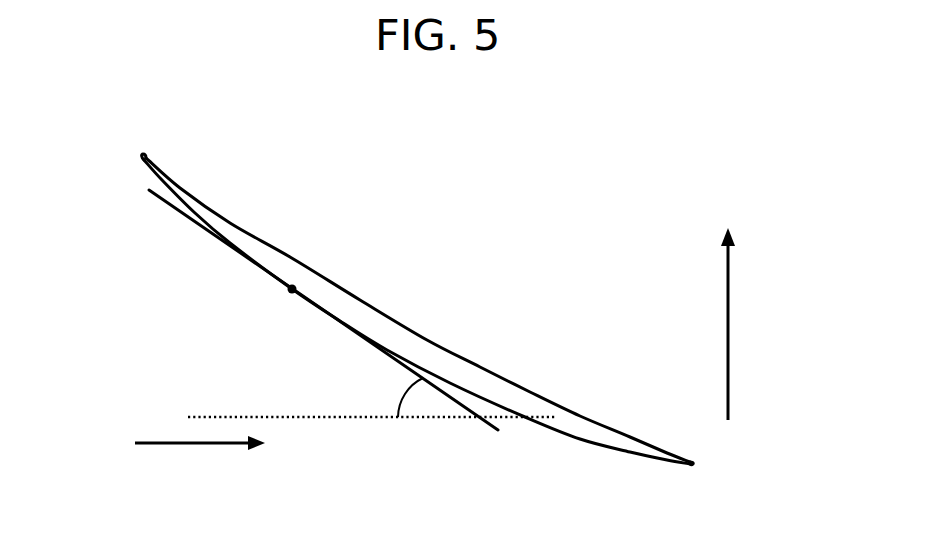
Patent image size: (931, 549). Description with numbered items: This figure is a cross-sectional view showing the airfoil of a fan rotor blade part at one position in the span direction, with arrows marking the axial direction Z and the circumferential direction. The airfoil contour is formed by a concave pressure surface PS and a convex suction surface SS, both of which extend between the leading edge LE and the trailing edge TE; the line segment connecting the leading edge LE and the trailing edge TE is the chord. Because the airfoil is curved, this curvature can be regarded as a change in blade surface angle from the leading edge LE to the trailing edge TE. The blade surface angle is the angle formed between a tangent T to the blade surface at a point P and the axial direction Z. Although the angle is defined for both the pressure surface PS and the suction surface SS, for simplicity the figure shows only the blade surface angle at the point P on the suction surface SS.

The leading edge LE is at (143, 153).
The trailing edge TE is at (692, 463).
The pressure surface PS is at (492, 373).
The suction surface SS is at (538, 420).
The tangent T is at (163, 201).
The point P is at (282, 307).
The axial direction Z is at (200, 460).